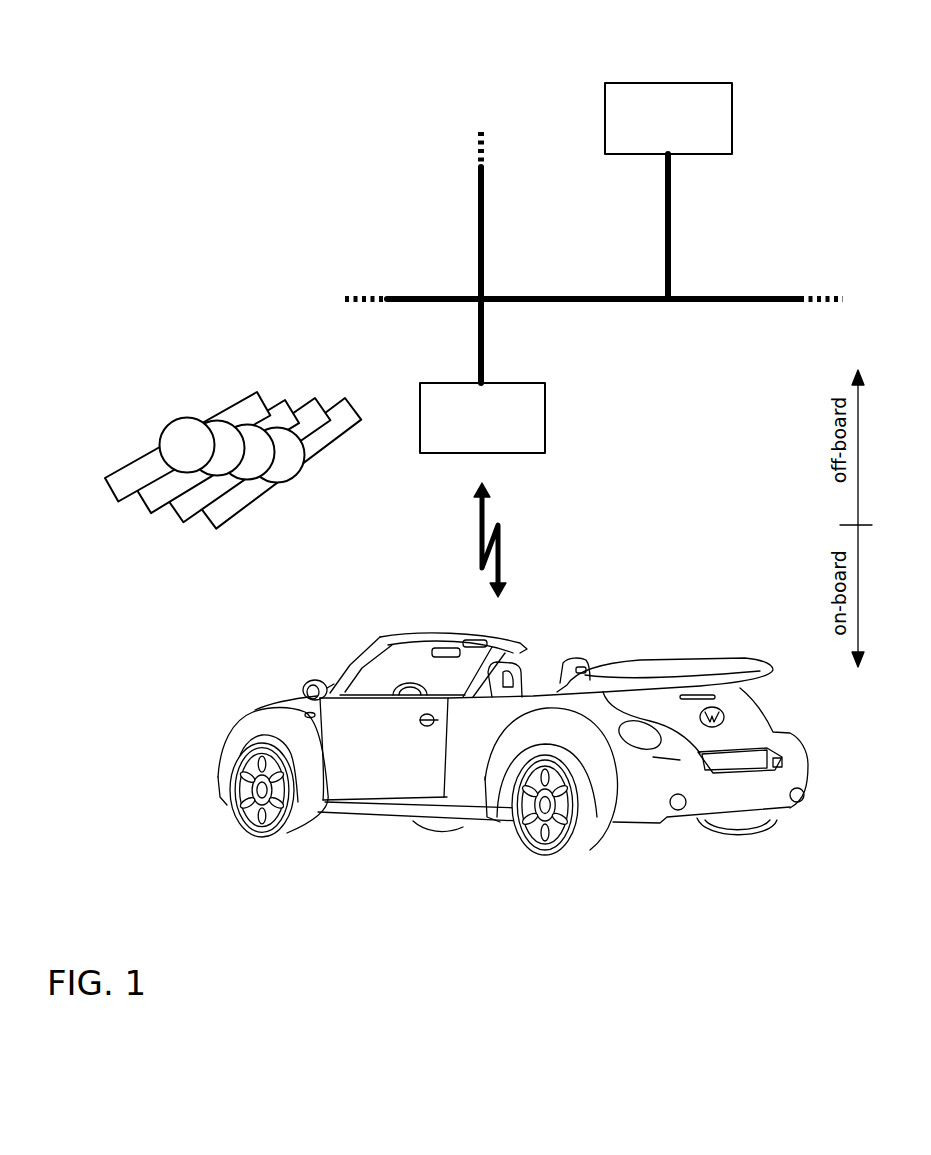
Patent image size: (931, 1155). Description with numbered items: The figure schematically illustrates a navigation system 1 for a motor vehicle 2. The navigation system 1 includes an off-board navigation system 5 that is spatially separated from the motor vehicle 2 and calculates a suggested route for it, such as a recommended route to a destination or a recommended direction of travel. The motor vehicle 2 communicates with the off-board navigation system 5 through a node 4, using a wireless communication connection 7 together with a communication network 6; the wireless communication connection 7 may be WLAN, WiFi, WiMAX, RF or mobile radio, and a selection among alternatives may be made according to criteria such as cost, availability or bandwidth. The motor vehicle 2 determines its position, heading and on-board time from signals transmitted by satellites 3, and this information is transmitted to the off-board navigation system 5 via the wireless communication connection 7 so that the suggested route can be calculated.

The navigation system 1 is at (250, 190).
The motor vehicle 2 is at (652, 705).
The satellites 3 is at (138, 462).
The node 4 is at (523, 420).
The off-board navigation system 5 is at (626, 115).
The communication network 6 is at (424, 297).
The wireless communication connection 7 is at (502, 548).